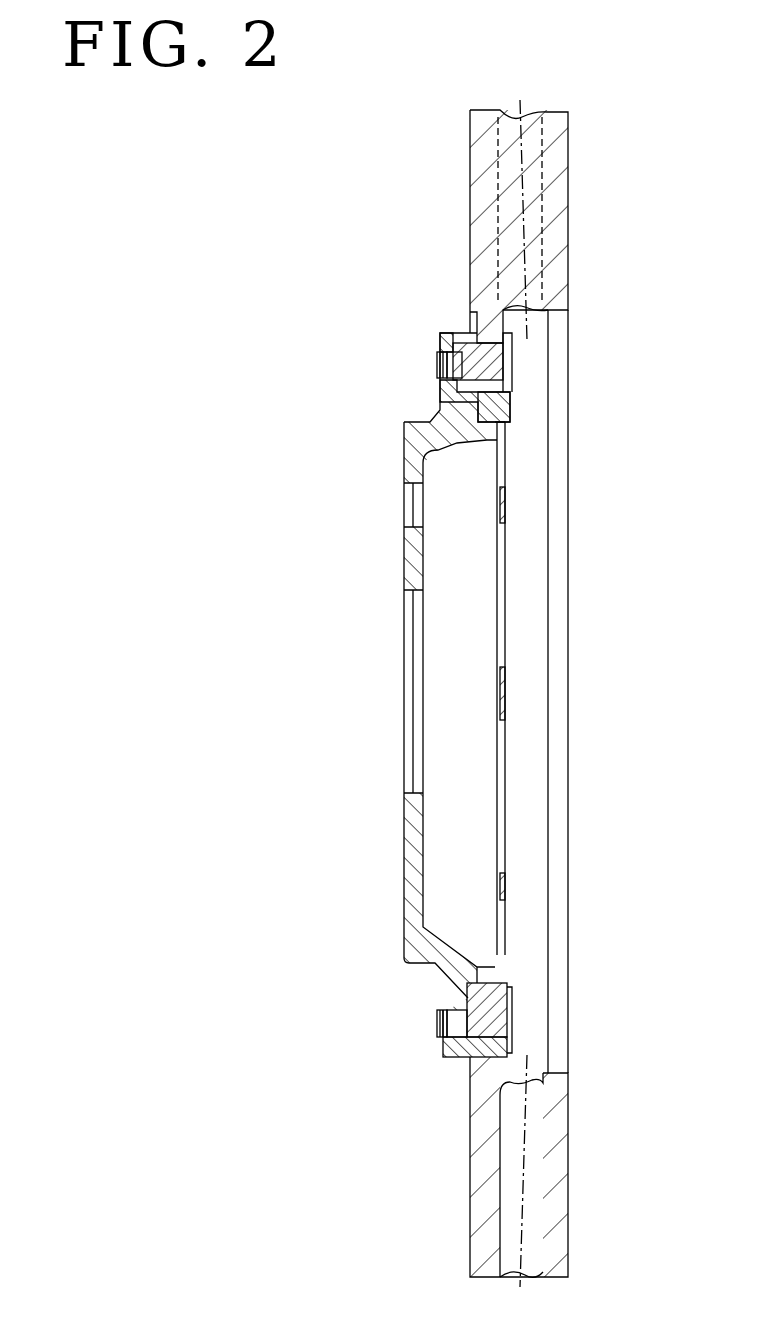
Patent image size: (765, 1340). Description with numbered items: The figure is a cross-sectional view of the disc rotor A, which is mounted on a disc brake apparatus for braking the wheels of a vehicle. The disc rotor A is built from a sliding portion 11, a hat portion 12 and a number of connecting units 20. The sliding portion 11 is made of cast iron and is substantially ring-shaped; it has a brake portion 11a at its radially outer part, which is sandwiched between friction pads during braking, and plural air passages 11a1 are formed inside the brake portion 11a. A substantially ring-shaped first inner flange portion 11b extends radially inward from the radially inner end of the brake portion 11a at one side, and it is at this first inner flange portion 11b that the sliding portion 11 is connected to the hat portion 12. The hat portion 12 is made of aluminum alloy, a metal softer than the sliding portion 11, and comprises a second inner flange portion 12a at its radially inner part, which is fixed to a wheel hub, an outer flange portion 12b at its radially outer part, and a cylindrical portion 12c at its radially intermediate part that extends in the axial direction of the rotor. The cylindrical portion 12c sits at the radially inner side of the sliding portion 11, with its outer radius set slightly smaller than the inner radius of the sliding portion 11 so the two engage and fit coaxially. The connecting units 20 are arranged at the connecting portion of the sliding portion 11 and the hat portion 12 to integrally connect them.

The disc rotor A is at (466, 213).
The sliding portion 11 is at (568, 204).
The brake portion 11a is at (563, 243).
The air passages 11a1 is at (537, 155).
The first inner flange portion 11b is at (498, 414).
The hat portion 12 is at (483, 712).
The second inner flange portion 12a is at (404, 843).
The outer flange portion 12b is at (455, 1056).
The cylindrical portion 12c is at (505, 955).
The connecting units 20 is at (524, 390).